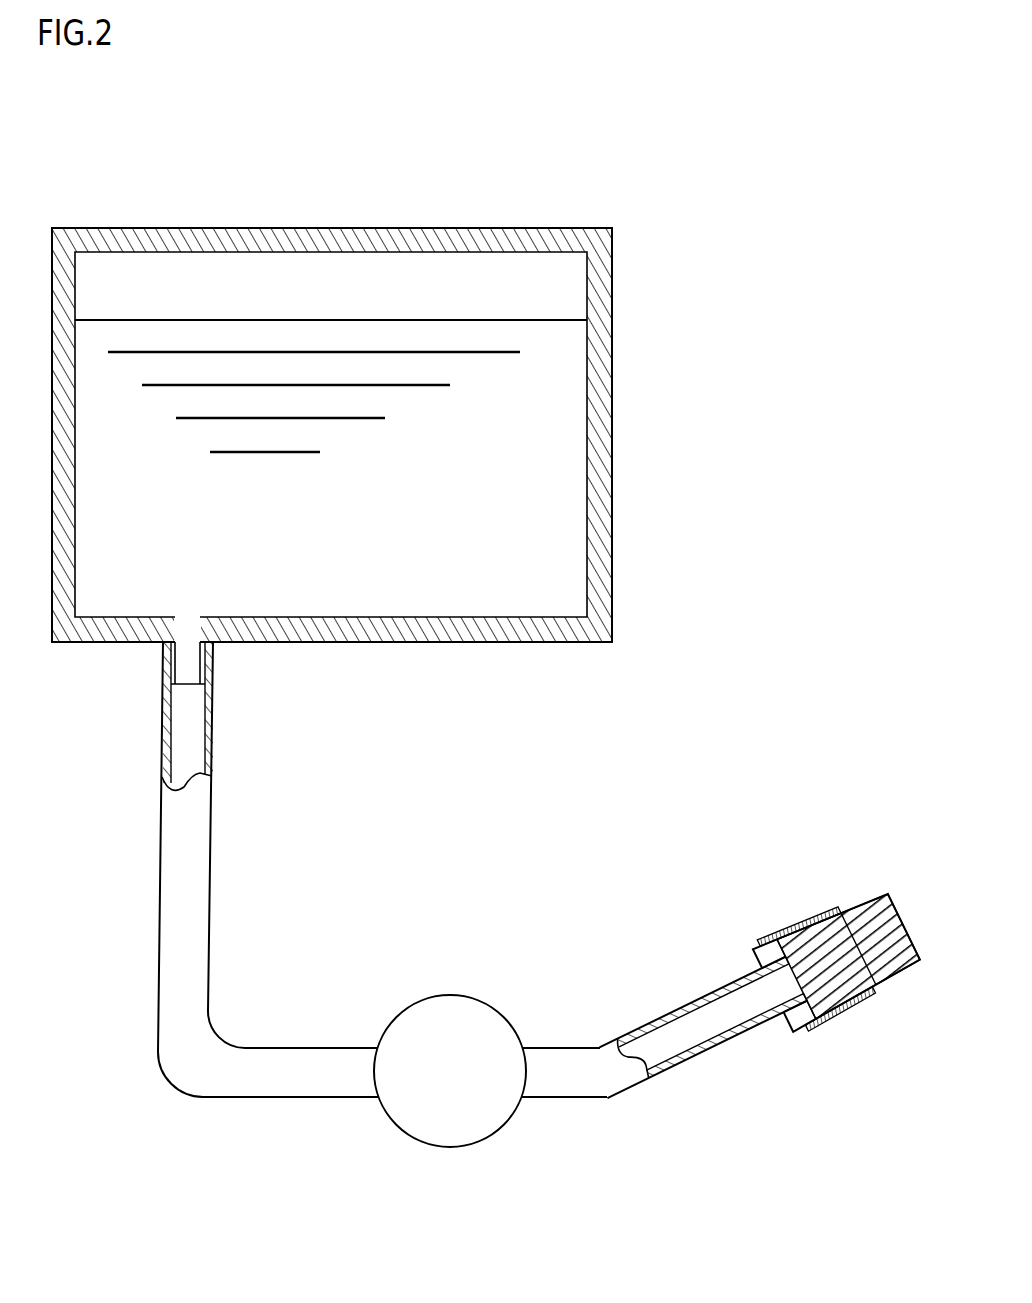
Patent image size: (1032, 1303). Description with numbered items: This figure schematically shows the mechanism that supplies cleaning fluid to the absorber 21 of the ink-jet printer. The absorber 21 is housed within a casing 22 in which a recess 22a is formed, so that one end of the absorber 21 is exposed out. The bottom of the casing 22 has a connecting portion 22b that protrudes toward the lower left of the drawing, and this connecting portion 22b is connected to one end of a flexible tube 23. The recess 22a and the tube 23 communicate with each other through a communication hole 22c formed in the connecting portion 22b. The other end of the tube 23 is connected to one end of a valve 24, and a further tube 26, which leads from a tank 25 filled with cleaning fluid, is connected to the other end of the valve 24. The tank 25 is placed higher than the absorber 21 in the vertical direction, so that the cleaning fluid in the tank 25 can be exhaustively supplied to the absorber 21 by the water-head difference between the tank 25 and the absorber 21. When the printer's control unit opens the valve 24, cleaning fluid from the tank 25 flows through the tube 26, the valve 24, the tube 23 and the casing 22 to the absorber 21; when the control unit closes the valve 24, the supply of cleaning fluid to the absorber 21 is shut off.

The absorber 21 is at (876, 905).
The casing 22 is at (818, 917).
The recess 22a is at (840, 1000).
The connecting portion 22b is at (762, 1022).
The communication hole 22c is at (742, 985).
The flexible tube 23 is at (625, 1072).
The valve 24 is at (446, 1133).
The tank 25 is at (602, 437).
The tube 26 is at (185, 862).